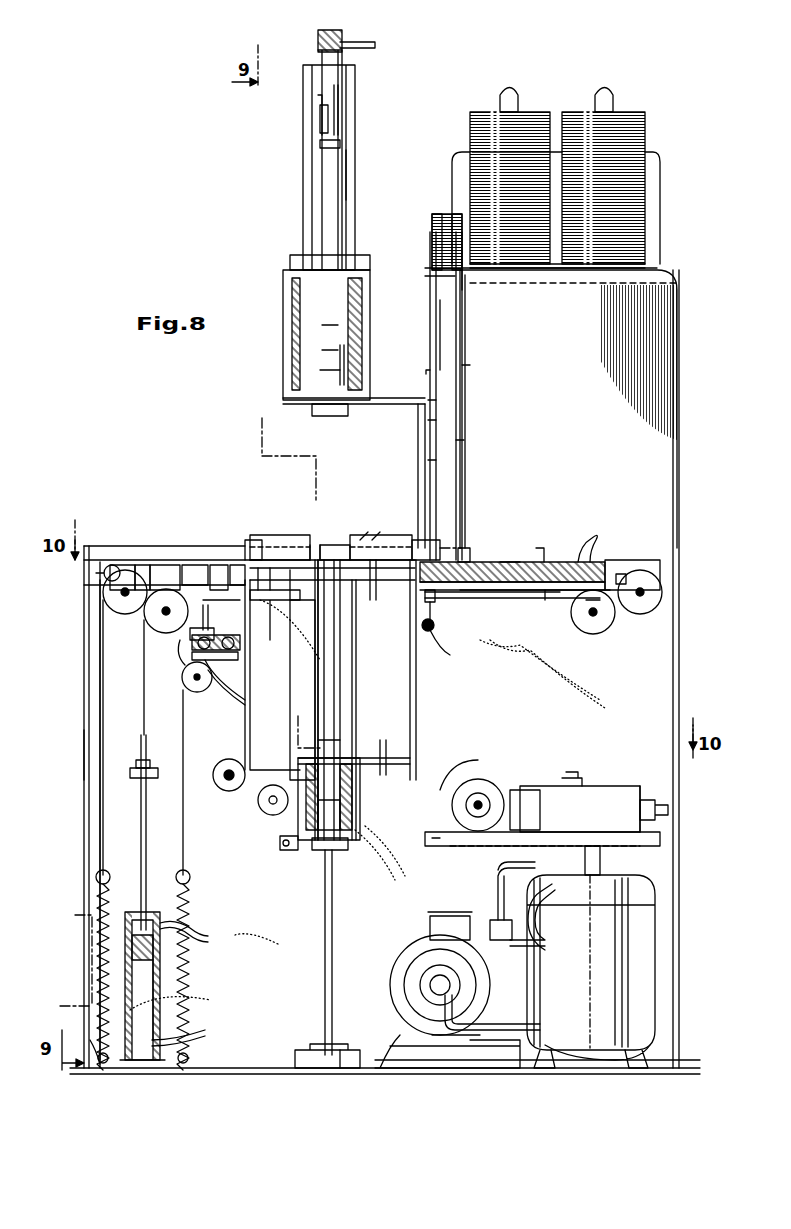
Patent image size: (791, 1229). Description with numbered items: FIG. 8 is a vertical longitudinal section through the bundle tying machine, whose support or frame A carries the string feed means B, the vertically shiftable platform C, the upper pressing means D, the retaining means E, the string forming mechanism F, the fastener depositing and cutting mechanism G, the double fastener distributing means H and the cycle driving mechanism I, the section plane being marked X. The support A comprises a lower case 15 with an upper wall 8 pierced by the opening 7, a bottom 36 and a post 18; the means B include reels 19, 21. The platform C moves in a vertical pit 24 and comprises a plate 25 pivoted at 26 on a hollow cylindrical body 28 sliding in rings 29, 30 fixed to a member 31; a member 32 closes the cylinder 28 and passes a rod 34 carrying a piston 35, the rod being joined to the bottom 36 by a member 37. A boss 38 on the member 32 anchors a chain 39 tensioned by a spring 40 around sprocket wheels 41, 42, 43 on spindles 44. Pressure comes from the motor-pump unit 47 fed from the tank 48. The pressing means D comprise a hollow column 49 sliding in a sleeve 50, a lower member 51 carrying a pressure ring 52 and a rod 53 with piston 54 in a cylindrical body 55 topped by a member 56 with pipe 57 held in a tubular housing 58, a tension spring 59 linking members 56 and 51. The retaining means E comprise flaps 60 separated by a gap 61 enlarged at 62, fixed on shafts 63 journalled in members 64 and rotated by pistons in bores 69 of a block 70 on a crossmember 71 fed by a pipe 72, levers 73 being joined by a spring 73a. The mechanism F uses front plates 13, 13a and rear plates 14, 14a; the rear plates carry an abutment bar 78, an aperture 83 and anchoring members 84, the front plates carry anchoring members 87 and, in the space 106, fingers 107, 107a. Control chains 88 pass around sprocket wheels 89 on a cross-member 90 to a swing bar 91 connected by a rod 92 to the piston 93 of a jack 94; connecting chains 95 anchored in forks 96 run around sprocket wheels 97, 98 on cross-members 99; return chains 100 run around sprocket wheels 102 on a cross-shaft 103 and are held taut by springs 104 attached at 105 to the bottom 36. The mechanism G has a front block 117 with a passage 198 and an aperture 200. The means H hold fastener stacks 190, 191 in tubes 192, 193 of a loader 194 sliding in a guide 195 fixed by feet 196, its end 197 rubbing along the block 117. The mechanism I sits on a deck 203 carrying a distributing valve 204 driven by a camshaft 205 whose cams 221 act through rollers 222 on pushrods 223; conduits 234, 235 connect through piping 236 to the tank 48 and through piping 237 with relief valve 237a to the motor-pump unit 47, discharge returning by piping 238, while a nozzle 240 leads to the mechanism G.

The support or frame A is at (680, 440).
The string feed and guide means B is at (574, 95).
The platform C is at (385, 540).
The upper pressing means D is at (300, 192).
The retaining means E is at (292, 532).
The string forming mechanism F is at (236, 535).
The fastener depositing and string cutting mechanism G is at (498, 560).
The double distributing means H is at (460, 414).
The cycle driving mechanism I is at (555, 782).
The section line X is at (312, 487).
The opening 7 is at (236, 565).
The upper wall 8 is at (172, 565).
The front plate 13 is at (145, 565).
The front plate 13a is at (140, 565).
The rear plate 14 is at (548, 562).
The rear plate 14a is at (525, 602).
The lower case 15 is at (84, 776).
The post 18 is at (418, 445).
The reel or ball 19 is at (530, 112).
The cylinder 21 is at (632, 112).
The vertical pit 24 is at (417, 684).
The plate 25 is at (388, 600).
The pivot 26 is at (360, 595).
The hollow cylindrical body 28 is at (330, 690).
The ring 29 is at (345, 770).
The ring 30 is at (360, 800).
The member 31 is at (380, 775).
The member 32 is at (348, 846).
The rod 34 is at (333, 968).
The piston 35 is at (350, 826).
The bottom 36 is at (286, 1062).
The member 37 is at (346, 1060).
The boss 38 is at (282, 850).
The chain 39 is at (258, 800).
The spring 40 is at (186, 918).
The sprocket wheel 41 is at (265, 812).
The sprocket wheel 42 is at (235, 760).
The sprocket wheel 43 is at (195, 680).
The spindle 44 is at (236, 772).
The motor-pump unit 47 is at (465, 980).
The tank 48 is at (591, 971).
The hollow column 49 is at (340, 130).
The sleeve 50 is at (365, 335).
The lower member 51 is at (283, 402).
The pressure ring 52 is at (348, 410).
The rod 53 is at (320, 372).
The piston 54 is at (334, 135).
The cylindrical body 55 is at (330, 140).
The member 56 is at (342, 52).
The pipe 57 is at (375, 45).
The tubular housing 58 is at (348, 170).
The tension spring 59 is at (345, 110).
The retaining flaps 60 is at (280, 542).
The gap 61 is at (334, 545).
The enlarged gap portion 62 is at (312, 545).
The shaft 63 is at (180, 622).
The member 64 is at (243, 610).
The blind bore 69 is at (190, 640).
The block 70 is at (232, 660).
The crossmember 71 is at (238, 652).
The pipe 72 is at (245, 703).
The lever 73 is at (436, 620).
The tension spring 73a is at (458, 647).
The abutment bar 78 is at (605, 565).
The aperture 83 is at (418, 540).
The chain anchoring member 84 is at (436, 598).
The chain anchoring member 87 is at (250, 610).
The control chain 88 is at (292, 592).
The sprocket wheel 89 is at (152, 625).
The cross-member 90 is at (160, 615).
The balancing or swing bar 91 is at (183, 748).
The rod 92 is at (141, 818).
The piston 93 is at (155, 955).
The jack 94 is at (158, 1010).
The connecting chain 95 is at (548, 590).
The fork 96 is at (640, 562).
The sprocket wheel 97 is at (652, 598).
The sprocket wheel 98 is at (612, 622).
The cross-member 99 is at (630, 573).
The return chain 100 is at (100, 688).
The sprocket wheel 102 is at (108, 600).
The cross-shaft 103 is at (104, 577).
The tension spring 104 is at (98, 900).
The attachment point 105 is at (92, 1048).
The space 106 is at (210, 940).
The upper finger 107 is at (218, 565).
The lower finger 107a is at (195, 565).
The front block 117 is at (540, 560).
The fastener stack 190 is at (432, 238).
The fastener stack 191 is at (458, 243).
The tube 192 is at (432, 248).
The tube 193 is at (462, 278).
The loader 194 is at (448, 326).
The guide 195 is at (466, 368).
The feet 196 is at (428, 378).
The loader end 197 is at (466, 560).
The passage 198 is at (512, 560).
The aperture 200 is at (485, 592).
The deck 203 is at (432, 835).
The distributing valve 204 is at (640, 786).
The camshaft 205 is at (452, 790).
The cam 221 is at (478, 780).
The roller 222 is at (500, 790).
The pushrod 223 is at (540, 790).
The conduit 234 is at (605, 842).
The conduit 235 is at (530, 838).
The piping 236 is at (600, 862).
The piping 237 is at (498, 866).
The relief valve 237a is at (492, 920).
The piping 238 is at (545, 944).
The conduit or nozzle 240 is at (580, 778).